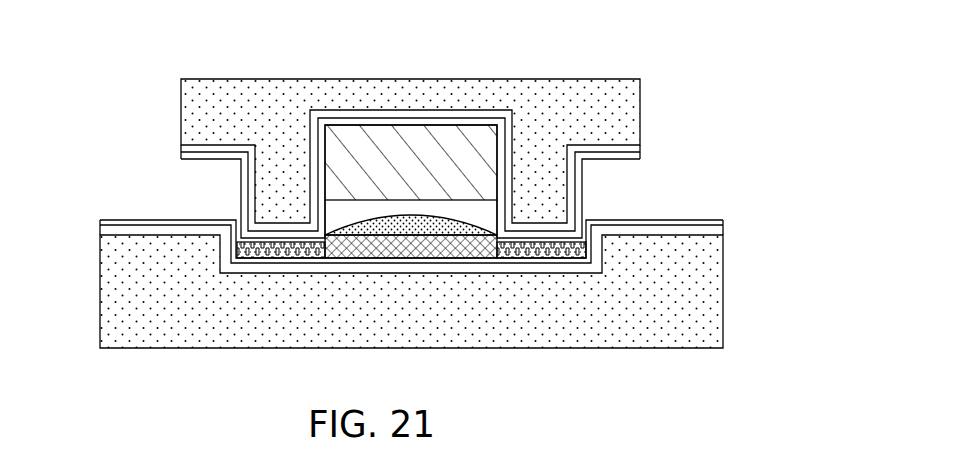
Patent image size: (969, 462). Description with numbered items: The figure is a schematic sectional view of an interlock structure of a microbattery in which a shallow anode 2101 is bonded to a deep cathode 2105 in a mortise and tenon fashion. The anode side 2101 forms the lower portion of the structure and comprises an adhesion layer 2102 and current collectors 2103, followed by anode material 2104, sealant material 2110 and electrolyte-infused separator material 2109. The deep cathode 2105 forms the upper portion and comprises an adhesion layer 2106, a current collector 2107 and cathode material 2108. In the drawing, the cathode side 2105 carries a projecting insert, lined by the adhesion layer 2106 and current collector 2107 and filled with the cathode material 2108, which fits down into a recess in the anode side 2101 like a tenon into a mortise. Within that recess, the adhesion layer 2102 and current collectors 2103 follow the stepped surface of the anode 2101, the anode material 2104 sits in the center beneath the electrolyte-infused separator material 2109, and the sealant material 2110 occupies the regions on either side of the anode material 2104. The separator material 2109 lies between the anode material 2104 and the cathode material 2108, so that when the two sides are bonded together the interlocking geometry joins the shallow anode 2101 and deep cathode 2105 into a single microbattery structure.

The shallow anode 2101 is at (440, 331).
The adhesion layer 2102 is at (723, 232).
The current collectors 2103 is at (723, 222).
The anode material 2104 is at (477, 258).
The deep cathode 2105 is at (209, 86).
The adhesion layer 2106 is at (194, 148).
The current collector 2107 is at (183, 156).
The cathode material 2108 is at (464, 152).
The electrolyte-infused separator material 2109 is at (433, 226).
The sealant material 2110 is at (237, 245).